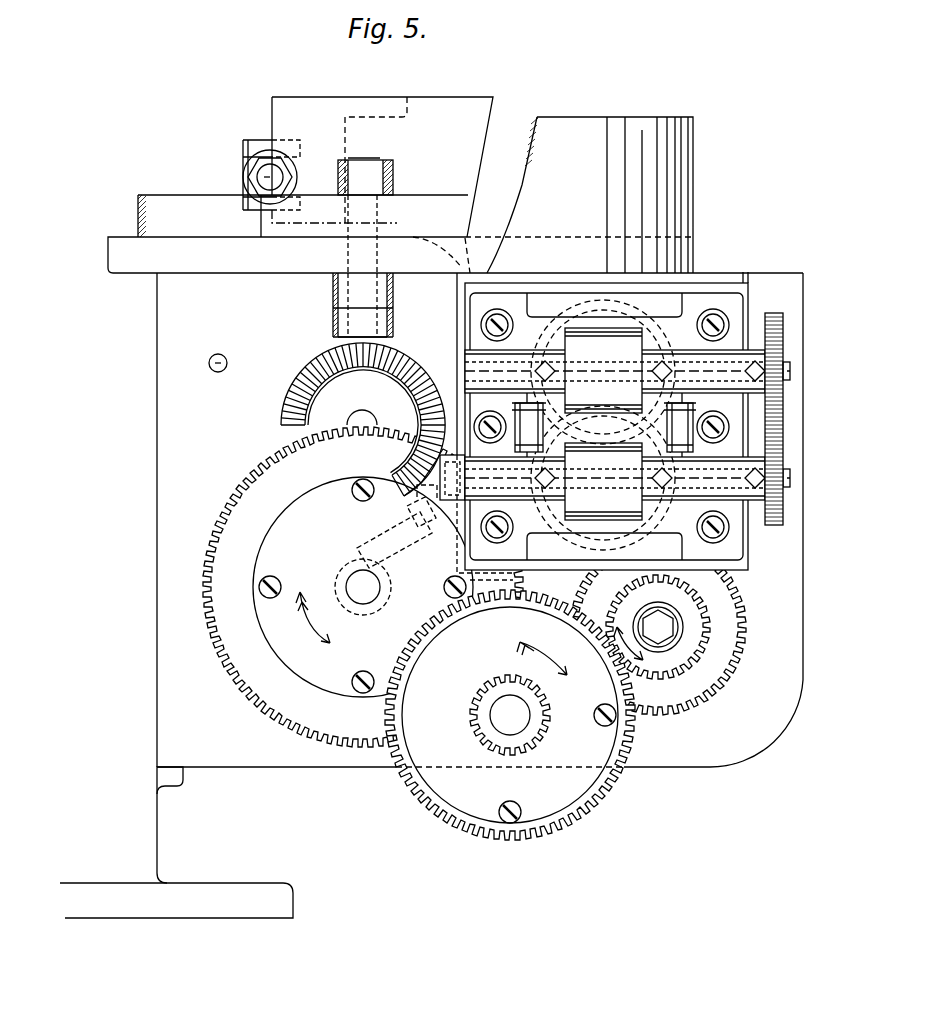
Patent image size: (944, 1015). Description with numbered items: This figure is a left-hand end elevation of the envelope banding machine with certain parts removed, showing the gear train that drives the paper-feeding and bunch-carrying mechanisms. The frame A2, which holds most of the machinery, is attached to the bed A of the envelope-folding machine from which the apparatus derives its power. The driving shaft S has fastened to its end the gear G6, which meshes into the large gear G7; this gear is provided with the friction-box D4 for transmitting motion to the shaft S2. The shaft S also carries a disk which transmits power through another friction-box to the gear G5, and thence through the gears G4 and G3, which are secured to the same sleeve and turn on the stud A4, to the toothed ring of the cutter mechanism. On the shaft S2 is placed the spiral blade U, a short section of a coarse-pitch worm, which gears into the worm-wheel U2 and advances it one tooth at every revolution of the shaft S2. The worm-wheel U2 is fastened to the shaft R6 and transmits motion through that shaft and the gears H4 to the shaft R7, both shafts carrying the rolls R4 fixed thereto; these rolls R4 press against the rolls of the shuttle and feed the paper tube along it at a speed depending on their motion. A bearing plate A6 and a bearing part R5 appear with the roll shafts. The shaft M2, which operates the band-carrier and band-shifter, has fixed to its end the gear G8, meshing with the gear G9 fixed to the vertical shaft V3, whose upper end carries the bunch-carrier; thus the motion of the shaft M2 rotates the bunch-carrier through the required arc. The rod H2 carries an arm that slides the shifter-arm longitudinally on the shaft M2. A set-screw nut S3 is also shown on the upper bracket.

The bed A is at (431, 595).
The frame A2 is at (455, 252).
The stud A4 is at (675, 650).
The bearing plate A6 is at (602, 426).
The shaft S3 is at (242, 168).
The shaft V3 is at (382, 163).
The rod H2 is at (210, 360).
The gear G8 is at (304, 372).
The gear G9 is at (398, 340).
The shaft M2 is at (350, 420).
The worm-wheel U2 is at (397, 458).
The spiral blade U is at (385, 548).
The shaft S2 is at (363, 587).
The friction-box D4 is at (363, 587).
The gear G7 is at (363, 587).
The shaft S is at (510, 715).
The gear G5 is at (600, 788).
The gear G6 is at (540, 742).
The gear G3 is at (690, 652).
The gear G4 is at (658, 627).
The rolls R4 is at (613, 483).
The shaft R7 is at (785, 377).
The gears H4 is at (783, 337).
The shaft R6 is at (785, 474).
The roller bearings R5 is at (690, 560).